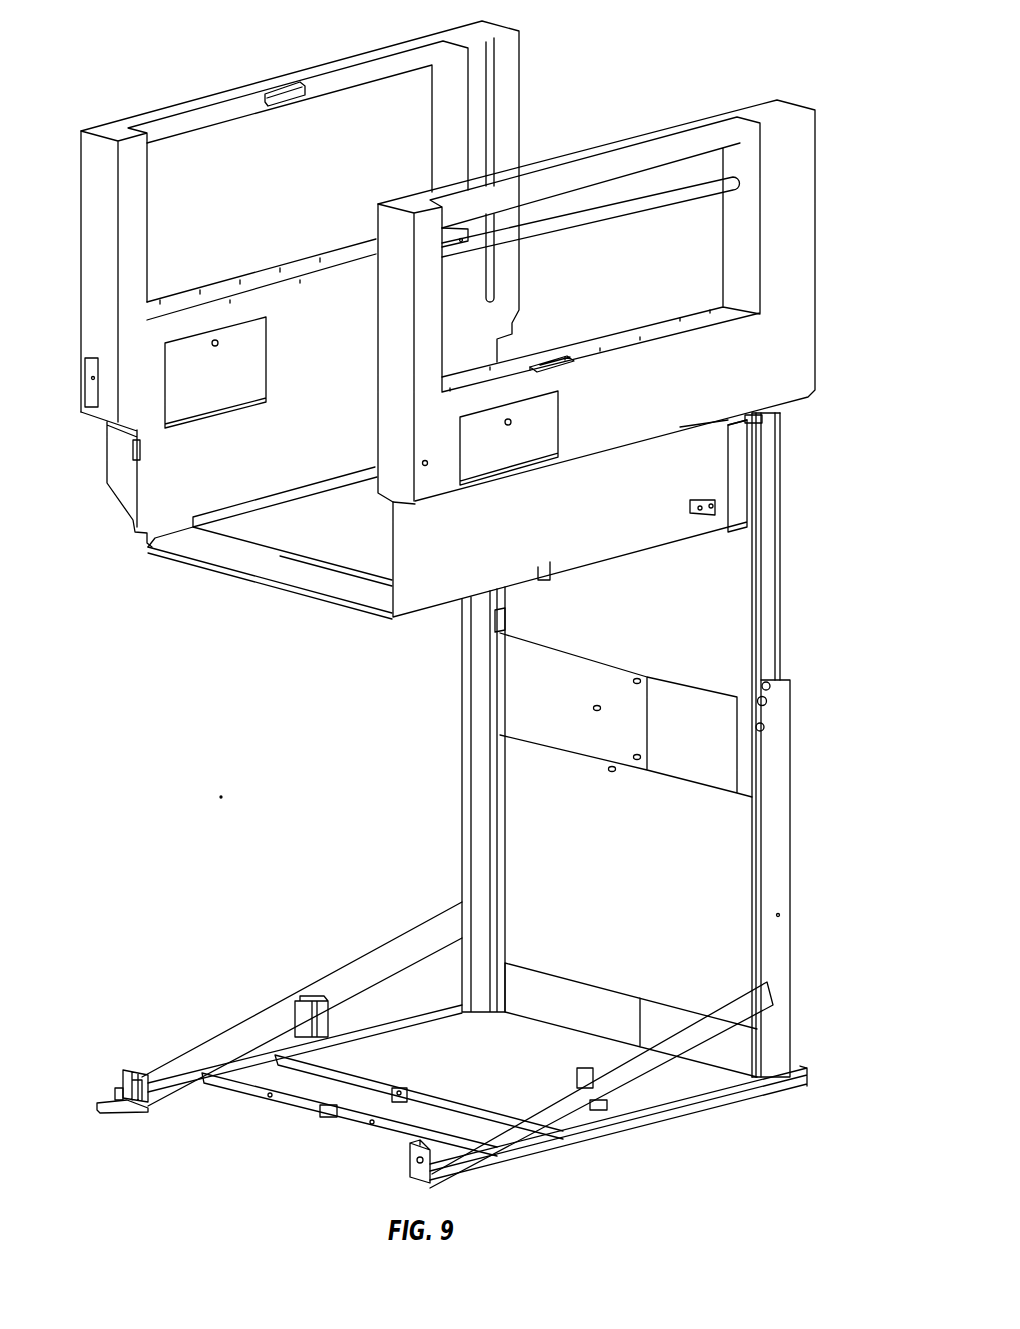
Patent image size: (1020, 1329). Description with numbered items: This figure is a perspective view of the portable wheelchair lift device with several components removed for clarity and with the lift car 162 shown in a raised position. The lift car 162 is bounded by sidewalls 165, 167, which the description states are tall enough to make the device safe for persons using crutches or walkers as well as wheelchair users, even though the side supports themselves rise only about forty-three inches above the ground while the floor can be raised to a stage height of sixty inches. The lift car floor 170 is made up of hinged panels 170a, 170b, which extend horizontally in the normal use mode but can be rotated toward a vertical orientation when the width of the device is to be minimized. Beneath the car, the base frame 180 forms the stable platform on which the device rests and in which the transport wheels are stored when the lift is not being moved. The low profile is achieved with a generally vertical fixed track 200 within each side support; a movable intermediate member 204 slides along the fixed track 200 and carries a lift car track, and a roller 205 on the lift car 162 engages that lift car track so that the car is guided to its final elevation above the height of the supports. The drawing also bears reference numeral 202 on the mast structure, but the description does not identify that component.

The lift car 162 is at (487, 338).
The sidewall 165 is at (788, 297).
The sidewall 167 is at (250, 87).
The lift car floor 170 is at (255, 565).
The first hinged panel 170a is at (218, 542).
The second hinged panel 170b is at (357, 583).
The base frame 180 is at (727, 1098).
The vertical fixed track 200 is at (783, 910).
The left guide column 202 is at (498, 902).
The movable intermediate member 204 is at (770, 643).
The roller 205 is at (762, 420).